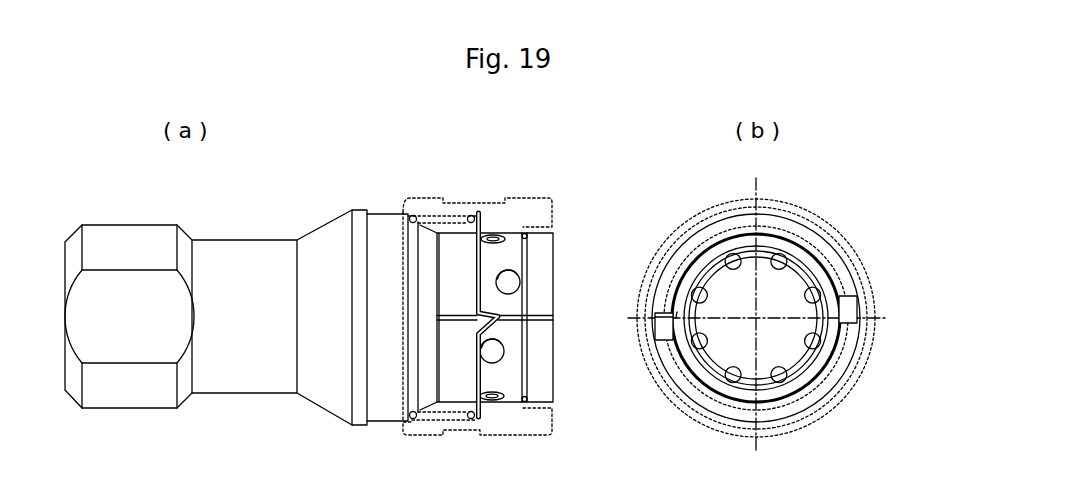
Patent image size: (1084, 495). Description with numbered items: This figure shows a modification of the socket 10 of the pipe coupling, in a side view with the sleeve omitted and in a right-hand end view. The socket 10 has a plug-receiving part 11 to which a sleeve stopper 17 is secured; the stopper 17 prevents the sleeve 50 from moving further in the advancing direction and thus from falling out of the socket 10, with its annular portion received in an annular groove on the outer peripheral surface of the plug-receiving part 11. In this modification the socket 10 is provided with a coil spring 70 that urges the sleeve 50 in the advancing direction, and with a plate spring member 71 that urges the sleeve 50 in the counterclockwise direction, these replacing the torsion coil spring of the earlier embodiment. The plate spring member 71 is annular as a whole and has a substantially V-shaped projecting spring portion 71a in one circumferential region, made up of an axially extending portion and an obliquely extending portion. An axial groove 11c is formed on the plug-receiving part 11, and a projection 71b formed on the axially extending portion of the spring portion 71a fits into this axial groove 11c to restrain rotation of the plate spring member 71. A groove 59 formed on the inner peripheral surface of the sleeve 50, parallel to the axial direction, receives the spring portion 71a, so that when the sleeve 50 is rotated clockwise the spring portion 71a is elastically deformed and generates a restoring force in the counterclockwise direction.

The socket 10 is at (228, 248).
The plug-receiving part 11 is at (545, 243).
The axial groove 11c is at (533, 317).
The sleeve stopper 17 is at (518, 232).
The sleeve 50 is at (490, 212).
The groove 59 is at (660, 320).
The coil spring 70 is at (440, 418).
The plate spring member 71 is at (472, 382).
The spring portion 71a is at (498, 322).
The projection 71b is at (692, 317).